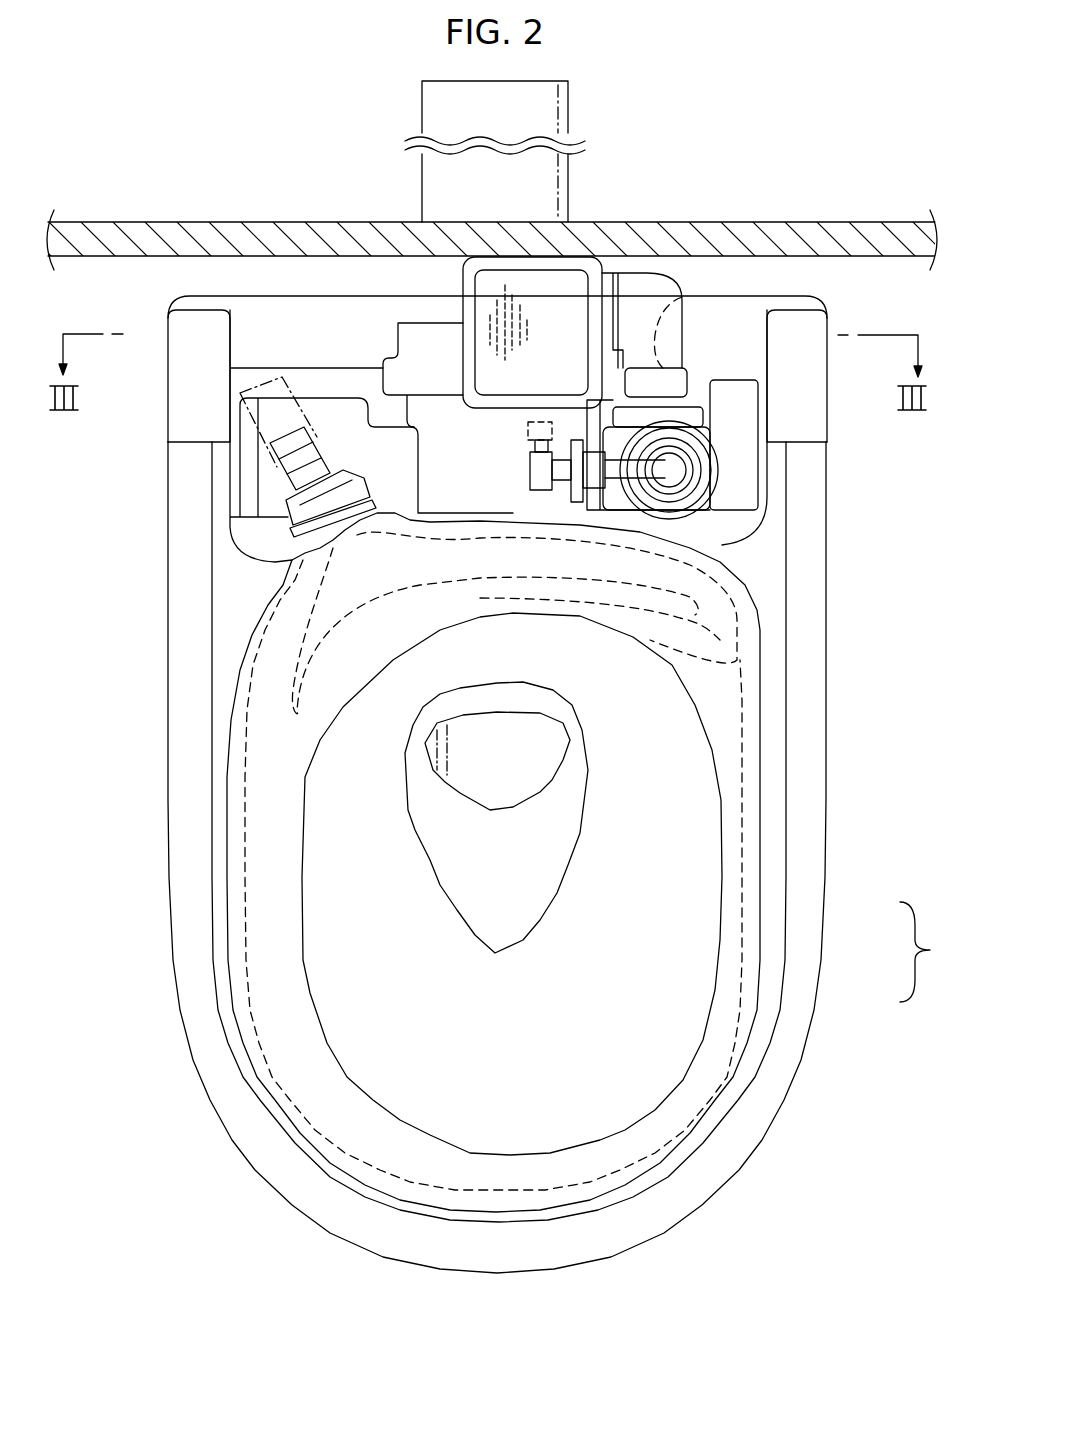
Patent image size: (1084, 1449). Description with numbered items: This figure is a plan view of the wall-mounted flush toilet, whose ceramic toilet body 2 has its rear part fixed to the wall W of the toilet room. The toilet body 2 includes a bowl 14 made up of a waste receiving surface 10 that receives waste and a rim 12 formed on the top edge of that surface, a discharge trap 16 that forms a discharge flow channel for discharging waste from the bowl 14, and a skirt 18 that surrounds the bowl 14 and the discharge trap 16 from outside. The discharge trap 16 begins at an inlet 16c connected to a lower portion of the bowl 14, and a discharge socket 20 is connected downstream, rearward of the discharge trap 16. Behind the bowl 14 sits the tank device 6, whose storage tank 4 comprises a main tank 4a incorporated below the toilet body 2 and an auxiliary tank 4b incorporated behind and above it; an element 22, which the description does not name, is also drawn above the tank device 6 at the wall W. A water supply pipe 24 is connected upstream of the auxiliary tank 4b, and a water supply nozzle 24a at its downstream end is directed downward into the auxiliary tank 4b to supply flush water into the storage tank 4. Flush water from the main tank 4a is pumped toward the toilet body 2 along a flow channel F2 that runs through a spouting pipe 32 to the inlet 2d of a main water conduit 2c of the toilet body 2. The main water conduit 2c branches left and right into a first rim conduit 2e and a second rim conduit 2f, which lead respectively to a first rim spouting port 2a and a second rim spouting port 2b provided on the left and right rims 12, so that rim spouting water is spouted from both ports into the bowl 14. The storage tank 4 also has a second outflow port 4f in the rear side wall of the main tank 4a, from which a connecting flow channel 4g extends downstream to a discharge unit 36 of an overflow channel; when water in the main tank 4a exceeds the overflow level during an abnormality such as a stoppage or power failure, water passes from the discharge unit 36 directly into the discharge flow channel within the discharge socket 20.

The toilet body 2 is at (497, 827).
The skirt 18 is at (612, 1265).
The bowl 14 is at (589, 832).
The waste receiving surface 10 is at (675, 905).
The rim 12 is at (780, 1043).
The discharge trap 16 is at (681, 817).
The inlet 16c is at (507, 740).
The first rim spouting port 2a is at (268, 736).
The second rim spouting port 2b is at (693, 657).
The main water conduit 2c is at (384, 589).
The inlet 2d is at (288, 585).
The first rim conduit 2e is at (267, 663).
The second rim conduit 2f is at (740, 600).
The discharge socket 20 is at (427, 375).
The water tank 22 is at (568, 104).
The water supply pipe 24 is at (528, 430).
The water supply nozzle 24a is at (672, 470).
The discharge unit 36 is at (553, 303).
The tank device 6 is at (615, 390).
The storage tank 4 is at (599, 344).
The main tank 4a is at (330, 425).
The auxiliary tank 4b is at (725, 468).
The second outflow port 4f is at (660, 376).
The connecting flow channel 4g is at (676, 362).
The flow channel F2 is at (181, 441).
The spouting pipe 32 is at (272, 453).
The wall W is at (893, 262).